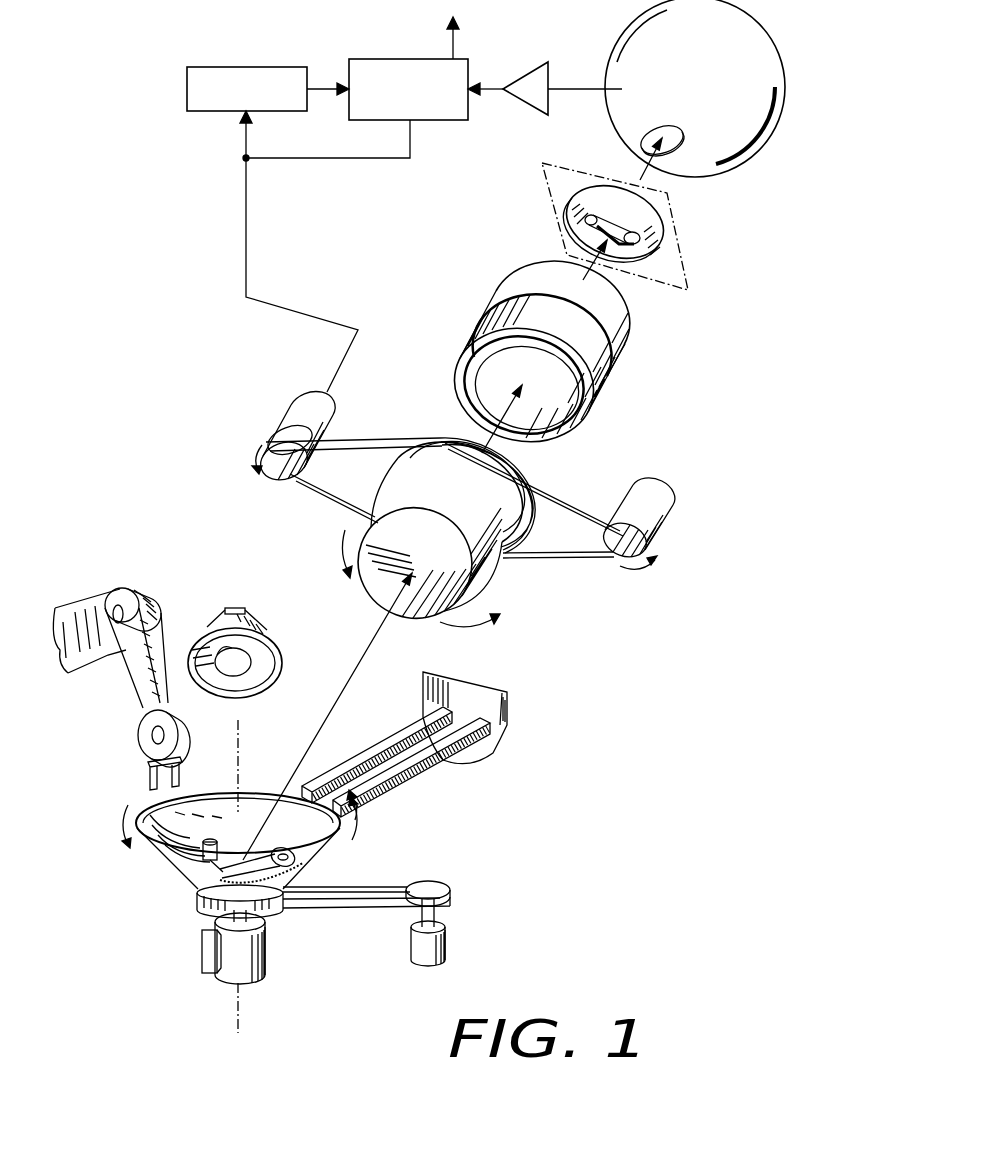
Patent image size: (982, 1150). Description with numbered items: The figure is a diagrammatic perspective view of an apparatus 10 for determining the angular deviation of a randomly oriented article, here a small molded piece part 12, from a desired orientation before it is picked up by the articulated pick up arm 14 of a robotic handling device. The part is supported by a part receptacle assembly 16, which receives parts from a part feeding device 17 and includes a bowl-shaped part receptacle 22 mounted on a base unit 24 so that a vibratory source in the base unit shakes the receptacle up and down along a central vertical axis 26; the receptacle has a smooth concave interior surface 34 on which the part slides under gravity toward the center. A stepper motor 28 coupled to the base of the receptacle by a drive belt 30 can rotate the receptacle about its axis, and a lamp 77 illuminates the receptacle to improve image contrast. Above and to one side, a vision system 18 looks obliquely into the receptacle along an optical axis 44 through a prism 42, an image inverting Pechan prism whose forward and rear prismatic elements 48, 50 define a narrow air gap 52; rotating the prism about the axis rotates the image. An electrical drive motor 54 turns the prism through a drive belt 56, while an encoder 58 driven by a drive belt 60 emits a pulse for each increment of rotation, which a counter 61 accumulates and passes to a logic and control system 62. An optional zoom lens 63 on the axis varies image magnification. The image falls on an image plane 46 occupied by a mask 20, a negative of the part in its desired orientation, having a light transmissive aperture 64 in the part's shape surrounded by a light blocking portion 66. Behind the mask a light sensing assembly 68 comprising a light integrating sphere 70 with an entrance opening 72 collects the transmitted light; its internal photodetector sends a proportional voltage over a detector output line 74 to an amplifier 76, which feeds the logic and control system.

The apparatus 10 is at (312, 552).
The molded piece part 12 is at (250, 862).
The pick up arm 14 is at (140, 687).
The part receptacle assembly 16 is at (368, 855).
The part feeding device 17 is at (498, 722).
The vision system 18 is at (517, 354).
The mask 20 is at (668, 225).
The bowl-shaped part receptacle 22 is at (225, 840).
The base unit 24 is at (256, 950).
The central vertical axis 26 is at (240, 728).
The stepper motor 28 is at (446, 943).
The drive belt 30 is at (343, 904).
The concave interior surface 34 is at (223, 800).
The prism 42 is at (449, 537).
The optical axis 44 is at (597, 268).
The image plane 46 is at (540, 180).
The forward prismatic element 48 is at (492, 543).
The rear prismatic element 50 is at (449, 465).
The air gap 52 is at (443, 505).
The electrical drive motor 54 is at (678, 507).
The drive belt 56 is at (550, 482).
The encoder 58 is at (290, 403).
The drive belt 60 is at (365, 428).
The counter 61 is at (228, 66).
The logic and control system 62 is at (408, 58).
The zoom lens 63 is at (482, 325).
The aperture 64 is at (587, 218).
The light blocking portion 66 is at (586, 238).
The light sensing assembly 68 is at (612, 20).
The light integrating sphere 70 is at (794, 6).
The entrance opening 72 is at (670, 143).
The detector output line 74 is at (578, 88).
The amplifier 76 is at (531, 78).
The lamp 77 is at (272, 630).